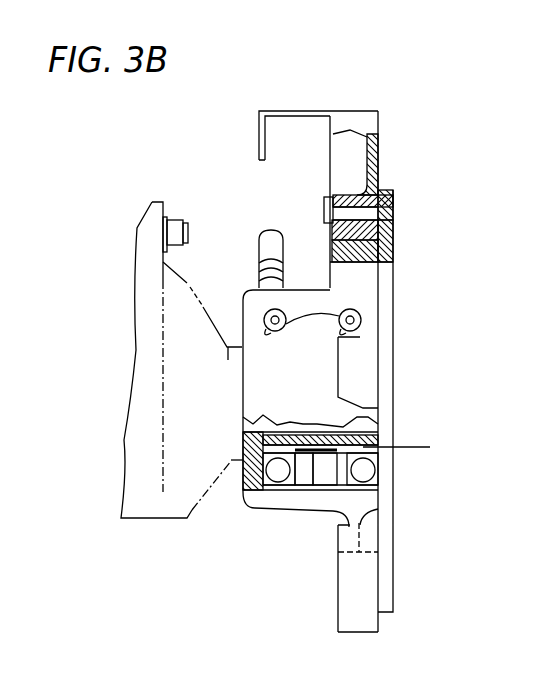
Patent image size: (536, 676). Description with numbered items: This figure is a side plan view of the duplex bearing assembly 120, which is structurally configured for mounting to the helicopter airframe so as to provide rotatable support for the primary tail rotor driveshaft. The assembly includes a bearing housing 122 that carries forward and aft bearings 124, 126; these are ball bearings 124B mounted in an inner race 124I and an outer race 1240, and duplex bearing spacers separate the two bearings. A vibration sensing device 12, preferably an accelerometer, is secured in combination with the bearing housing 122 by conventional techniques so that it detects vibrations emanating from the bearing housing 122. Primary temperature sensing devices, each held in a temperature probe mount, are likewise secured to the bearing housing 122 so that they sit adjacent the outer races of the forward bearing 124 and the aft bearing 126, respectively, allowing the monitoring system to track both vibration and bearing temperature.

The duplex bearing assembly 120 is at (197, 193).
The vibration sensing device 12 is at (267, 247).
The bearing housing 122 is at (305, 303).
The inner race 124I is at (243, 416).
The forward bearing 124 is at (262, 471).
The ball bearings 124B is at (275, 476).
The outer race 1240 is at (330, 487).
The aft bearing 126 is at (375, 473).